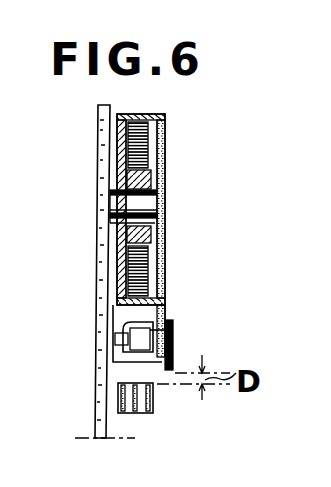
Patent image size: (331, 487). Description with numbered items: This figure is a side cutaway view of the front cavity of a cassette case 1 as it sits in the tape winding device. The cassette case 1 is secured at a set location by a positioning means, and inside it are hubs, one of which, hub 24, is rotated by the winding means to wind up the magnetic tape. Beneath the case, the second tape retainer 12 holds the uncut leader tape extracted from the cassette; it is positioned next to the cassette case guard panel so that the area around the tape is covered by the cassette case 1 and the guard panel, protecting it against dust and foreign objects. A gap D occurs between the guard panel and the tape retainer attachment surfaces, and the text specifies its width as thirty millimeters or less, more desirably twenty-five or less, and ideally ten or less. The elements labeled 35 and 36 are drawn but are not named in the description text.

The cassette case 1 is at (165, 150).
The hub 24 is at (157, 216).
The sensor 35 is at (130, 343).
The detection bar 36 is at (174, 350).
The second tape retainer 12 is at (148, 413).